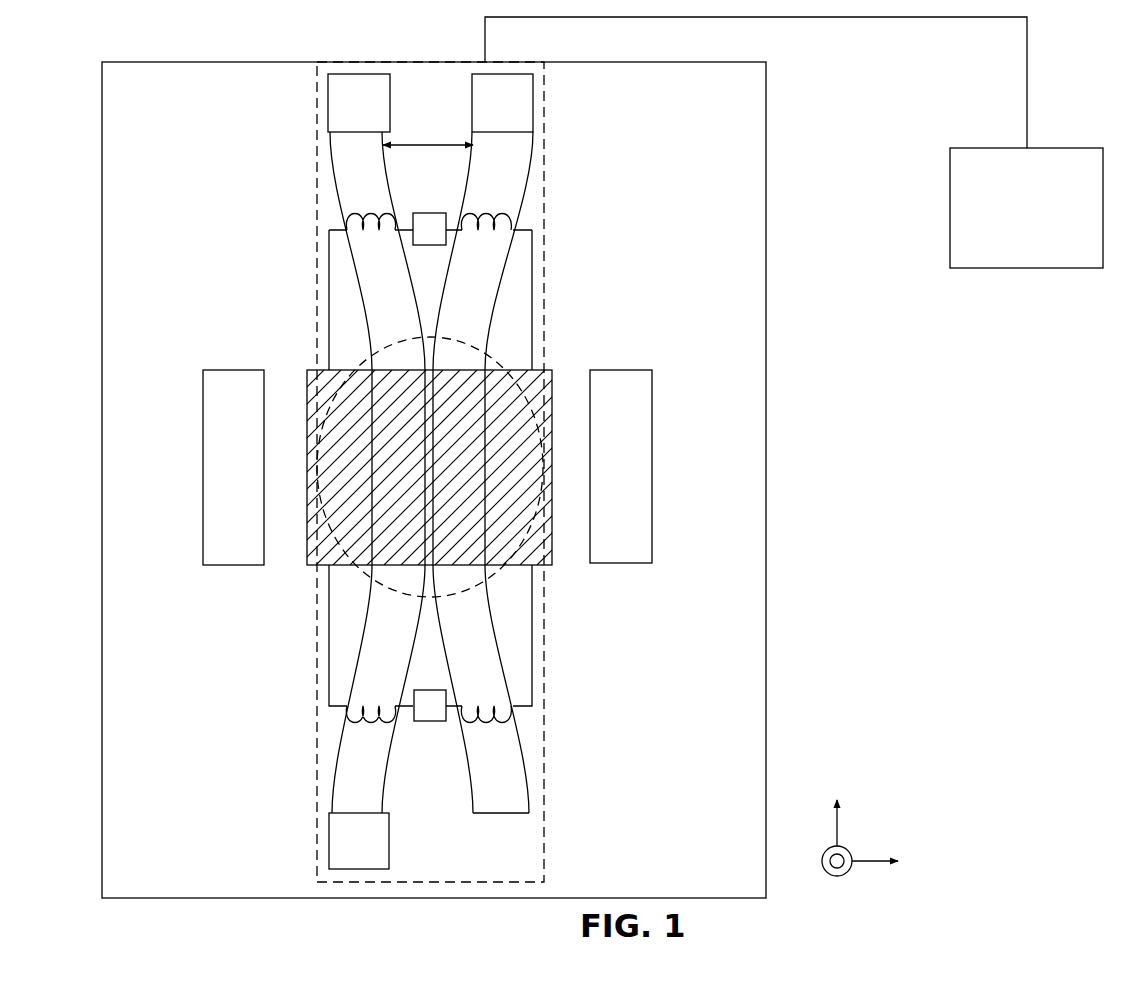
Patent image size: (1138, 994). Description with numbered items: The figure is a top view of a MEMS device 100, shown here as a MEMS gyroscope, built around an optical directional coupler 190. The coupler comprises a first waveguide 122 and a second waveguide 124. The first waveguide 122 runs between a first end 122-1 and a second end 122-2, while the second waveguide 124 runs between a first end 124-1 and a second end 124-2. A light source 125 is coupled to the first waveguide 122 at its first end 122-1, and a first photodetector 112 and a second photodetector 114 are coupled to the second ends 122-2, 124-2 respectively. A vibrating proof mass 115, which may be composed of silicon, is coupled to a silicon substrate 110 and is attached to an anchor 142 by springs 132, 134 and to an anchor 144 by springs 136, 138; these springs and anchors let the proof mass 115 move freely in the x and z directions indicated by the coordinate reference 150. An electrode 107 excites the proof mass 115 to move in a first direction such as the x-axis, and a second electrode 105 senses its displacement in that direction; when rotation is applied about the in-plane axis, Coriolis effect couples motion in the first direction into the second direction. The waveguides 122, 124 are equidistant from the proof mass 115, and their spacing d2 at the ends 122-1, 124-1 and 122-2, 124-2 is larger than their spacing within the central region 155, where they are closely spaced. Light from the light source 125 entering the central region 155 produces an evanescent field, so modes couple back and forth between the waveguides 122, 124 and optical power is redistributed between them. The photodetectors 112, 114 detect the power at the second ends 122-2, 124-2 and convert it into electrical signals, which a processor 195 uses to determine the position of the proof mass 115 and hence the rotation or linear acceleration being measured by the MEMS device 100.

The MEMS device 100 is at (845, 468).
The second electrode 105 is at (652, 467).
The electrode 107 is at (203, 467).
The second substrate 110 is at (752, 714).
The first photodetector 112 is at (328, 103).
The second photodetector 114 is at (533, 103).
The vibrating proof mass 115 is at (527, 383).
The first waveguide 122 is at (378, 620).
The first end of first waveguide 122-1 is at (340, 813).
The second end of first waveguide 122-2 is at (345, 140).
The second waveguide 124 is at (482, 620).
The first end of second waveguide 124-1 is at (520, 813).
The second end of second waveguide 124-2 is at (514, 140).
The light source 125 is at (329, 841).
The spring 132 is at (347, 222).
The spring 134 is at (518, 222).
The spring 136 is at (518, 718).
The spring 138 is at (349, 718).
The anchor 142 is at (431, 213).
The anchor 144 is at (431, 721).
The coordinate reference 150 is at (918, 777).
The central region 155 is at (378, 350).
The optical directional coupler 190 is at (317, 668).
The processor 195 is at (1006, 235).
The distance between waveguides at ends d2 is at (431, 145).